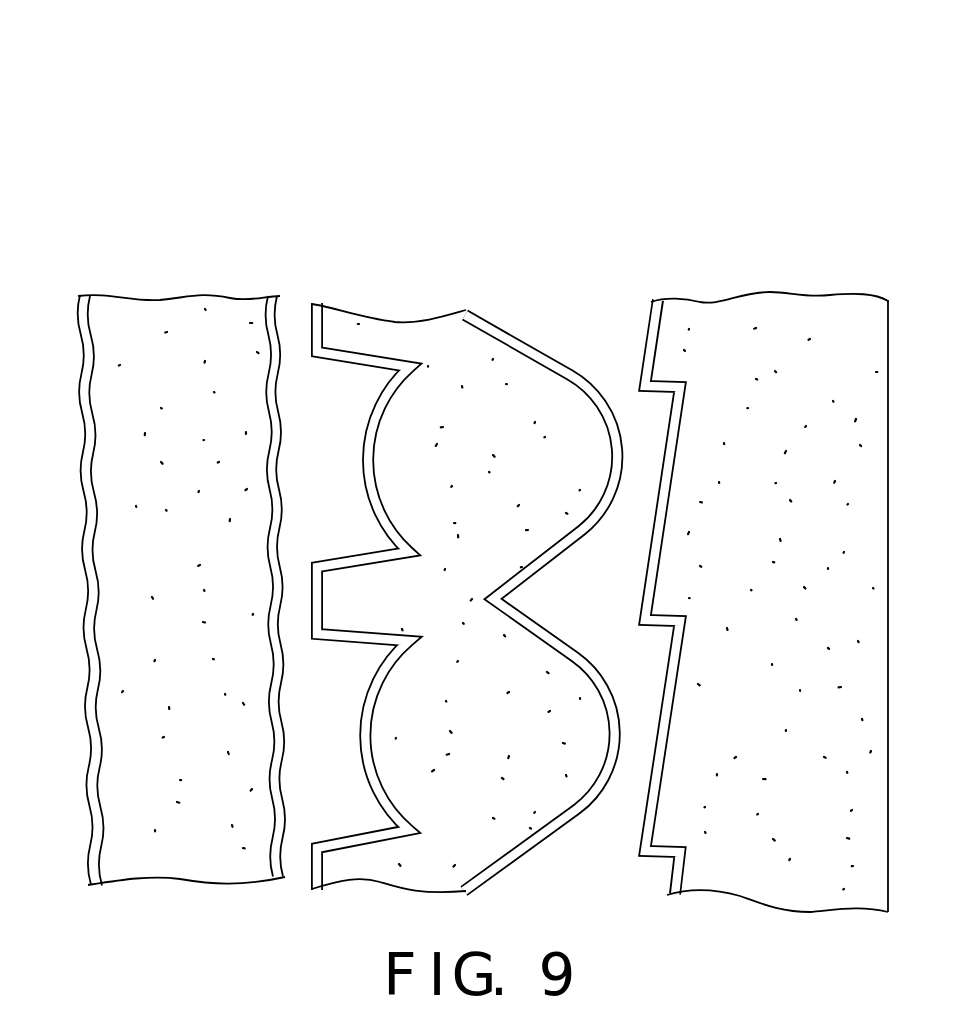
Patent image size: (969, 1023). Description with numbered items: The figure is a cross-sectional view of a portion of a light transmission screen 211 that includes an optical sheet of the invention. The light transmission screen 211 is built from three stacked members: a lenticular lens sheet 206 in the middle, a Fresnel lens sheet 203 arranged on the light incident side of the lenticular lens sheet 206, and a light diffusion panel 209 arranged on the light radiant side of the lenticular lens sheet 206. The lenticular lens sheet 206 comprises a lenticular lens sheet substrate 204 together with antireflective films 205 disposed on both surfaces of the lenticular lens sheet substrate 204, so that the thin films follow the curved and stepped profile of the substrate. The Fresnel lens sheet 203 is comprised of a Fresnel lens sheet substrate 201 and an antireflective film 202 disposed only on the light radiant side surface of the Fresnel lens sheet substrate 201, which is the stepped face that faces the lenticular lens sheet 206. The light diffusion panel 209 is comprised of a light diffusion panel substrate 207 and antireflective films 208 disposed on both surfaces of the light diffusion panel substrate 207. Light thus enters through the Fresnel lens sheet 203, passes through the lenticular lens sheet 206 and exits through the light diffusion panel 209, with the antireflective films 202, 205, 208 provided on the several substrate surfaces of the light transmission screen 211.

The Fresnel lens sheet substrate 201 is at (775, 312).
The antireflective film 202 is at (660, 312).
The Fresnel lens sheet 203 is at (797, 193).
The lenticular lens sheet substrate 204 is at (428, 320).
The antireflective films 205 is at (316, 305).
The lenticular lens sheet 206 is at (530, 203).
The light diffusion panel substrate 207 is at (180, 307).
The antireflective films 208 is at (80, 297).
The light diffusion panel 209 is at (302, 203).
The light transmission screen 211 is at (872, 78).